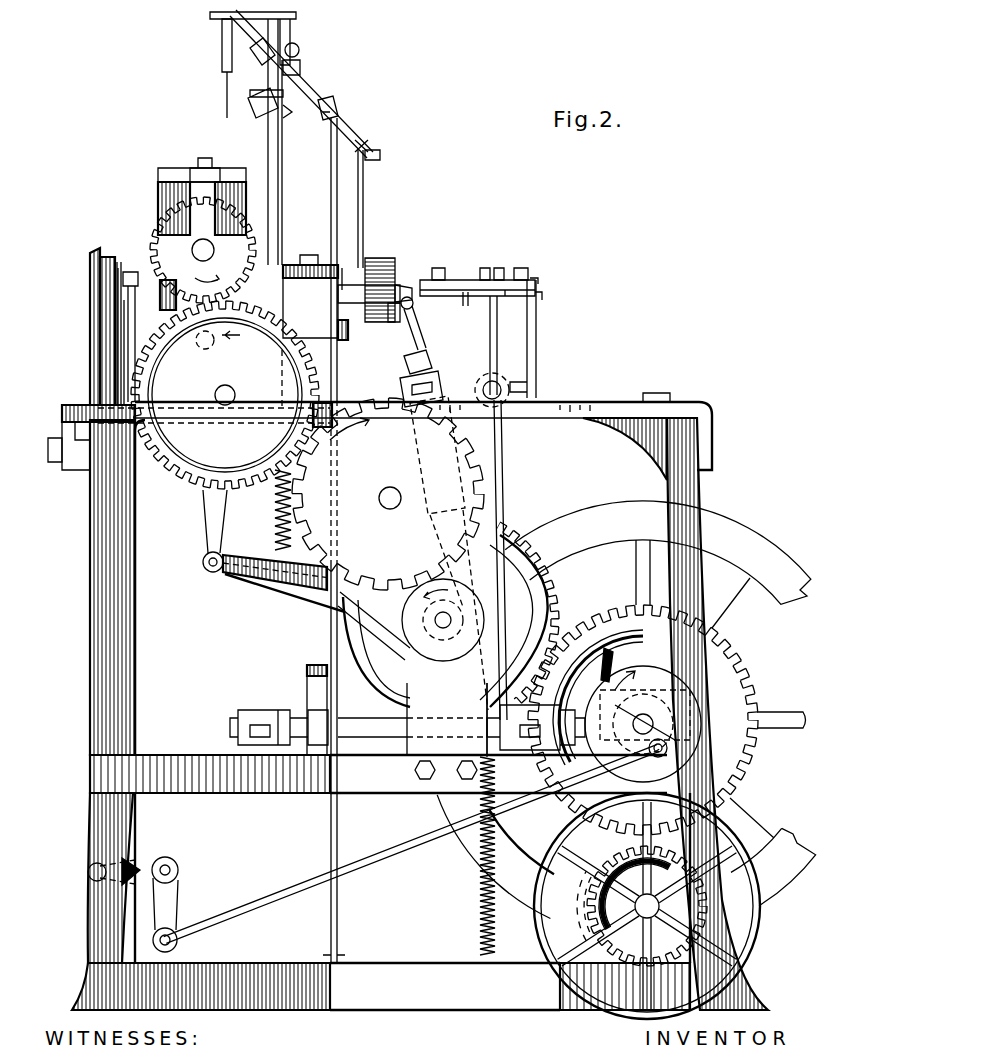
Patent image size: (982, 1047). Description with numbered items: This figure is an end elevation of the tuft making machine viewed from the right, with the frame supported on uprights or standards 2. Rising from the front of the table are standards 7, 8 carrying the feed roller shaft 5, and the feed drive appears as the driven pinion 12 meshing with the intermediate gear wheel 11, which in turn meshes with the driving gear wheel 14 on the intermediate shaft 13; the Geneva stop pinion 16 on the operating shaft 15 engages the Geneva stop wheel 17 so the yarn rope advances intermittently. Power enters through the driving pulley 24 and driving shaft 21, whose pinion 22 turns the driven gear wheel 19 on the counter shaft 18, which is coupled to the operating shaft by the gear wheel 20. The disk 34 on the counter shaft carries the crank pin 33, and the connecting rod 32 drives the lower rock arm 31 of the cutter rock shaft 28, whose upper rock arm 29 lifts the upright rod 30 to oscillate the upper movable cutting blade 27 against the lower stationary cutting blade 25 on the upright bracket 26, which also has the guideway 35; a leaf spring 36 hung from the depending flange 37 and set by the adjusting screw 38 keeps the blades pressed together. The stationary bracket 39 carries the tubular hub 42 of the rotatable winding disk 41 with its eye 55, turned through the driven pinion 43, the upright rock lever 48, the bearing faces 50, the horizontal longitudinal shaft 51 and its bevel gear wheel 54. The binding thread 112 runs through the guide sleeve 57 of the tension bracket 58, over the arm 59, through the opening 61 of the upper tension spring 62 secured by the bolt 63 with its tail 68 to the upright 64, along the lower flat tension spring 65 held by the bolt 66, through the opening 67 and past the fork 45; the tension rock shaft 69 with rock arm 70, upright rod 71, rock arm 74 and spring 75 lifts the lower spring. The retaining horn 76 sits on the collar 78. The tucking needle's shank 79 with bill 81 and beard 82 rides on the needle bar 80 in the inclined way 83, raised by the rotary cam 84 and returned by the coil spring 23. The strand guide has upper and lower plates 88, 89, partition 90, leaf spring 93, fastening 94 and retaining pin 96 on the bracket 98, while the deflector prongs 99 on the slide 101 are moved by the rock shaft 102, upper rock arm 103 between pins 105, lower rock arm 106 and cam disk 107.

The uprights or standards 2 is at (411, 714).
The horizontal shaft 5 is at (203, 250).
The standard 7 is at (598, 410).
The standard 8 is at (160, 198).
The intermediate gear wheel 11 is at (215, 395).
The driven pinion 12 is at (203, 250).
The intermediate shaft 13 is at (386, 504).
The driving gear wheel 14 is at (484, 476).
The operating shaft 15 is at (443, 628).
The Geneva or intermittent stop pinion 16 is at (443, 621).
The Geneva or intermittent stop wheel 17 is at (409, 553).
The counter shaft 18 is at (644, 727).
The driven gear wheel 19 is at (748, 662).
The gear wheel 20 is at (552, 598).
The driving shaft 21 is at (650, 918).
The pinion 22 is at (582, 905).
The coil spring 23 is at (480, 925).
The driving pulley 24 is at (752, 946).
The lower stationary cutting blade 25 is at (118, 349).
The upright bracket 26 is at (112, 365).
The upper movable cutting blade 27 is at (108, 252).
The cutter rock shaft 28 is at (172, 870).
The upper rock arm 29 is at (88, 874).
The upright rod 30 is at (90, 650).
The lower rock arm 31 is at (161, 914).
The connecting rod 32 is at (227, 920).
The crank pin 33 is at (658, 757).
The disk 34 is at (668, 750).
The guideway 35 is at (135, 300).
The leaf spring 36 is at (72, 462).
The depending flange 37 is at (80, 408).
The adjusting screw 38 is at (50, 465).
The stationary bracket 39 is at (310, 296).
The rotatable winding disk or head 41 is at (376, 320).
The tubular hub 42 is at (343, 284).
The driven pinion 43 is at (322, 268).
The fork 45 is at (326, 112).
The upright rock lever 48 is at (339, 930).
The upright bearing faces 50 is at (306, 672).
The horizontal longitudinal shaft 51 is at (372, 735).
The bevel gear wheel 54 is at (612, 660).
The eye 55 is at (393, 322).
The stationary guide sleeve 57 is at (223, 58).
The tension bracket 58 is at (290, 22).
The arm 59 is at (210, 17).
The opening 61 is at (302, 70).
The upper tension spring 62 is at (298, 84).
The bolt 63 is at (299, 50).
The upright 64 is at (280, 200).
The lower flat tension spring 65 is at (380, 158).
The bolt 66 is at (284, 118).
The opening 67 is at (368, 146).
The tail 68 is at (251, 48).
The tension rock shaft 69 is at (205, 566).
The rock arm 70 is at (238, 570).
The upright rod 71 is at (349, 259).
The rock arm 74 is at (293, 598).
The spring 75 is at (272, 528).
The retaining horn 76 is at (400, 276).
The collar 78 is at (380, 260).
The upright shank 79 is at (428, 358).
The needle bar or slide 80 is at (445, 645).
The bill or hook 81 is at (413, 305).
The guard or beard 82 is at (414, 314).
The inclined way 83 is at (438, 388).
The rotary cam 84 is at (374, 626).
The upper plate 88 is at (540, 284).
The lower plate 89 is at (538, 298).
The longitudinal upright partition or wall 90 is at (541, 292).
The leaf spring 93 is at (507, 296).
The upright screw or fastening 94 is at (520, 268).
The vertical retaining pin 96 is at (466, 298).
The bracket 98 is at (536, 352).
The prongs 99 is at (436, 279).
The slide 101 is at (538, 280).
The rock shaft 102 is at (495, 395).
The upper rock arm 103 is at (498, 342).
The pins 105 is at (485, 266).
The lower rock arm 106 is at (498, 500).
The cam disk 107 is at (455, 680).
The binding thread or cord 112 is at (363, 193).